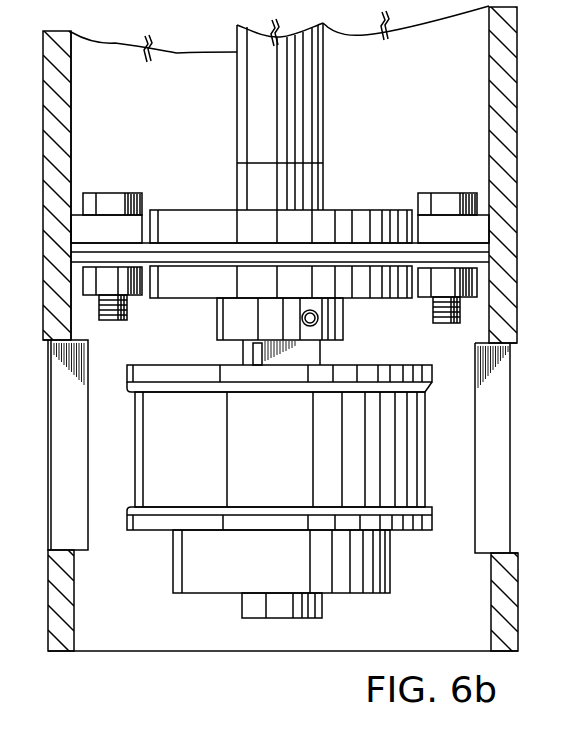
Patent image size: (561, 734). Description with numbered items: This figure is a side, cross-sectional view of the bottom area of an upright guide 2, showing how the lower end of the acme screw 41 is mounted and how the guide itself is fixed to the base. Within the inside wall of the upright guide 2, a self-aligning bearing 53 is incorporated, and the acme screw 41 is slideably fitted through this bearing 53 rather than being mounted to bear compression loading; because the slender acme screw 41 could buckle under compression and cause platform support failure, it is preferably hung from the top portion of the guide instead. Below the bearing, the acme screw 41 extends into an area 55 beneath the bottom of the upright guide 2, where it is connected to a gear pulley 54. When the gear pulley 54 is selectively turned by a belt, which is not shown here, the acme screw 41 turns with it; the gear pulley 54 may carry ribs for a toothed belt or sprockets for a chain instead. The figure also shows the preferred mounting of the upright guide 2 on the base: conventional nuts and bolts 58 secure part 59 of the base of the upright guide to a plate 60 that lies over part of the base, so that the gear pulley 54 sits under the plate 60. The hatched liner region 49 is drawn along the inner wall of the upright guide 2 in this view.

The upright guide 2 is at (62, 90).
The acme screw 41 is at (323, 130).
The inner liner 49 is at (72, 138).
The self-aligning bearing 53 is at (200, 241).
The gear pulley 54 is at (425, 473).
The area beneath the bottom of the upright guide 55 is at (133, 652).
The nuts and bolts 58 is at (142, 200).
The part of the base of the upright guide 59 is at (102, 227).
The plate 60 is at (200, 247).